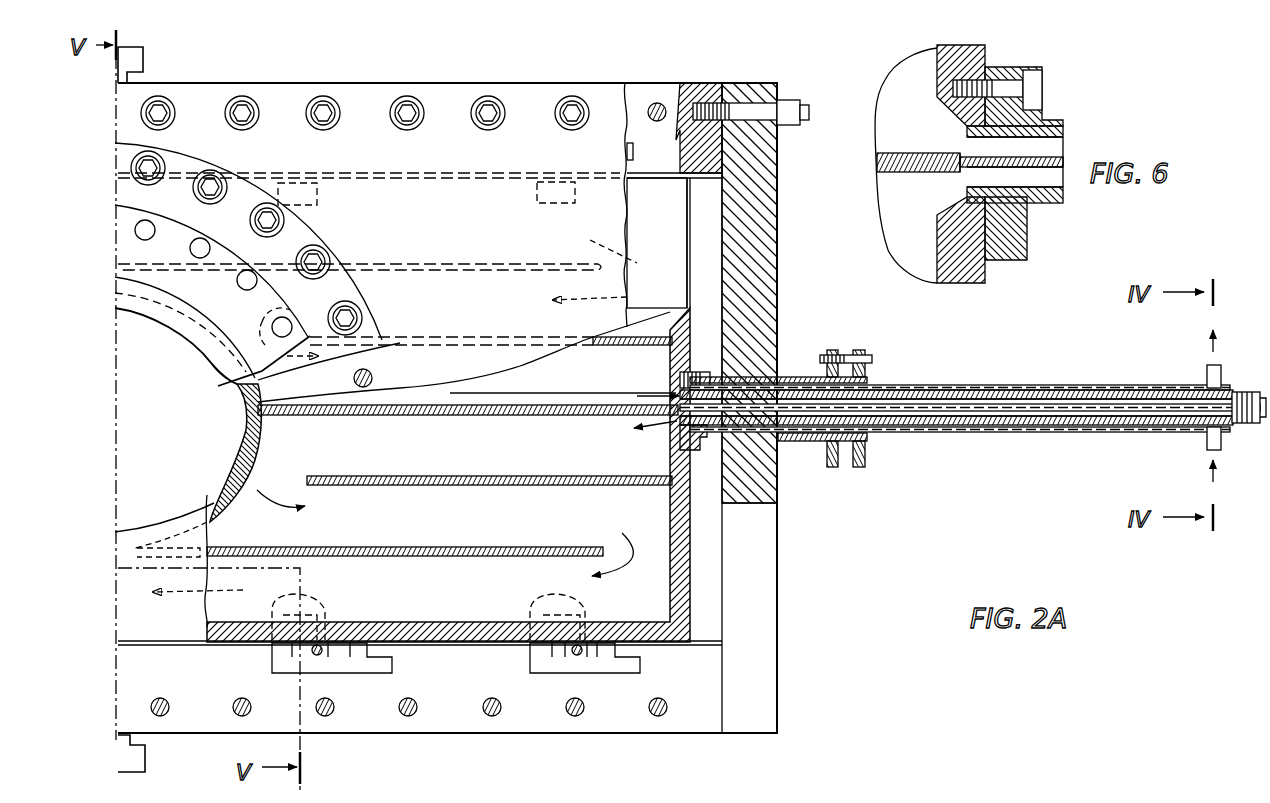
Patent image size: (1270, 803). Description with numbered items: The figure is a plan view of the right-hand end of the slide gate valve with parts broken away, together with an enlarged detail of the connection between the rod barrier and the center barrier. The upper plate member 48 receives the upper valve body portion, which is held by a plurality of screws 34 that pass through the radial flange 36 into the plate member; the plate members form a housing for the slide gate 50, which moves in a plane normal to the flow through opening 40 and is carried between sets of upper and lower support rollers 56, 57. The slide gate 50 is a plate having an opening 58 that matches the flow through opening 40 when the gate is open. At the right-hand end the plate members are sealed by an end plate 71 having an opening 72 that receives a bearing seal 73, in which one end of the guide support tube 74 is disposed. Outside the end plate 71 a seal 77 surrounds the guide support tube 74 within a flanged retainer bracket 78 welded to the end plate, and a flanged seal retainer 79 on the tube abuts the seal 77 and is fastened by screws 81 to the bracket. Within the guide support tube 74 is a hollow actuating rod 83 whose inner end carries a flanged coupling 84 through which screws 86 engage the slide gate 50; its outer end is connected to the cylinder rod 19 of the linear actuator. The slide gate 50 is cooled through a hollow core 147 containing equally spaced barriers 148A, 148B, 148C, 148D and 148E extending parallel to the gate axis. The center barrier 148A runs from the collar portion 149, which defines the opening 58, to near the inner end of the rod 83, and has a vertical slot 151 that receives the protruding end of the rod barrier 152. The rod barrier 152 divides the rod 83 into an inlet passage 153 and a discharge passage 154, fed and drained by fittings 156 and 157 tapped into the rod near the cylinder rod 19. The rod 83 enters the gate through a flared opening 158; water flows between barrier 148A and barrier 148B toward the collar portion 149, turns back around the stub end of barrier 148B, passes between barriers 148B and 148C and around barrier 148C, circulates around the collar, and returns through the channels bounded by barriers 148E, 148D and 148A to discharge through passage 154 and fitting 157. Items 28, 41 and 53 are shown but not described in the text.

In FIG. 2A, the cylinder rod 19 is at (1258, 390).
In FIG. 2A, the flange of rotating body 28 is at (286, 299).
In FIG. 2A, the screws 34 is at (330, 262).
In FIG. 2A, the radial flange 36 is at (286, 222).
In FIG. 2A, the flow through opening 40 is at (176, 432).
In FIG. 2A, the ring 41 is at (177, 328).
In FIG. 2A, the upper plate member 48 is at (609, 95).
In FIG. 2A, the slide gate 50 is at (692, 560).
In FIG. 2A, the seal ring 53 is at (210, 350).
In FIG. 2A, the upper support rollers 56 is at (320, 180).
In FIG. 2A, the lower support rollers 57 is at (560, 182).
In FIG. 2A, the opening 58 is at (222, 505).
In FIG. 2A, the end plate 71 is at (735, 245).
In FIG. 2A, the opening 72 is at (749, 476).
In FIG. 2A, the bearing seal 73 is at (742, 293).
In FIG. 2A, the guide support tube 74 is at (1048, 385).
In FIG. 2A, the seal 77 is at (822, 458).
In FIG. 2A, the flanged retainer bracket 78 is at (832, 351).
In FIG. 2A, the flanged seal retainer 79 is at (870, 380).
In FIG. 2A, the screws 81 is at (872, 357).
In FIG. 2A, the slide gate actuating rod 83 is at (992, 425).
In FIG. 6, the slide gate actuating rod 83 is at (1045, 205).
In FIG. 2A, the flanged coupling 84 is at (695, 444).
In FIG. 2A, the screws 86 is at (682, 378).
In FIG. 6, the screws 86 is at (1040, 92).
In FIG. 2A, the hollow core 147 is at (440, 600).
In FIG. 6, the hollow core 147 is at (885, 217).
In FIG. 2A, the center barrier 148A is at (478, 416).
In FIG. 6, the center barrier 148A is at (905, 170).
In FIG. 2A, the barrier 148B is at (362, 477).
In FIG. 2A, the barrier 148C is at (440, 548).
In FIG. 2A, the barrier 148D is at (592, 346).
In FIG. 2A, the barrier 148E is at (492, 270).
In FIG. 2A, the collar portion 149 is at (250, 438).
In FIG. 6, the vertical slot 151 is at (960, 160).
In FIG. 2A, the rod barrier 152 is at (918, 410).
In FIG. 6, the rod barrier 152 is at (1060, 152).
In FIG. 2A, the passage 153 is at (1064, 412).
In FIG. 6, the passage 153 is at (1060, 172).
In FIG. 2A, the passage 154 is at (1095, 398).
In FIG. 6, the passage 154 is at (1065, 138).
In FIG. 2A, the fitting 156 is at (1206, 440).
In FIG. 2A, the fitting 157 is at (1206, 372).
In FIG. 6, the opening 158 is at (960, 130).